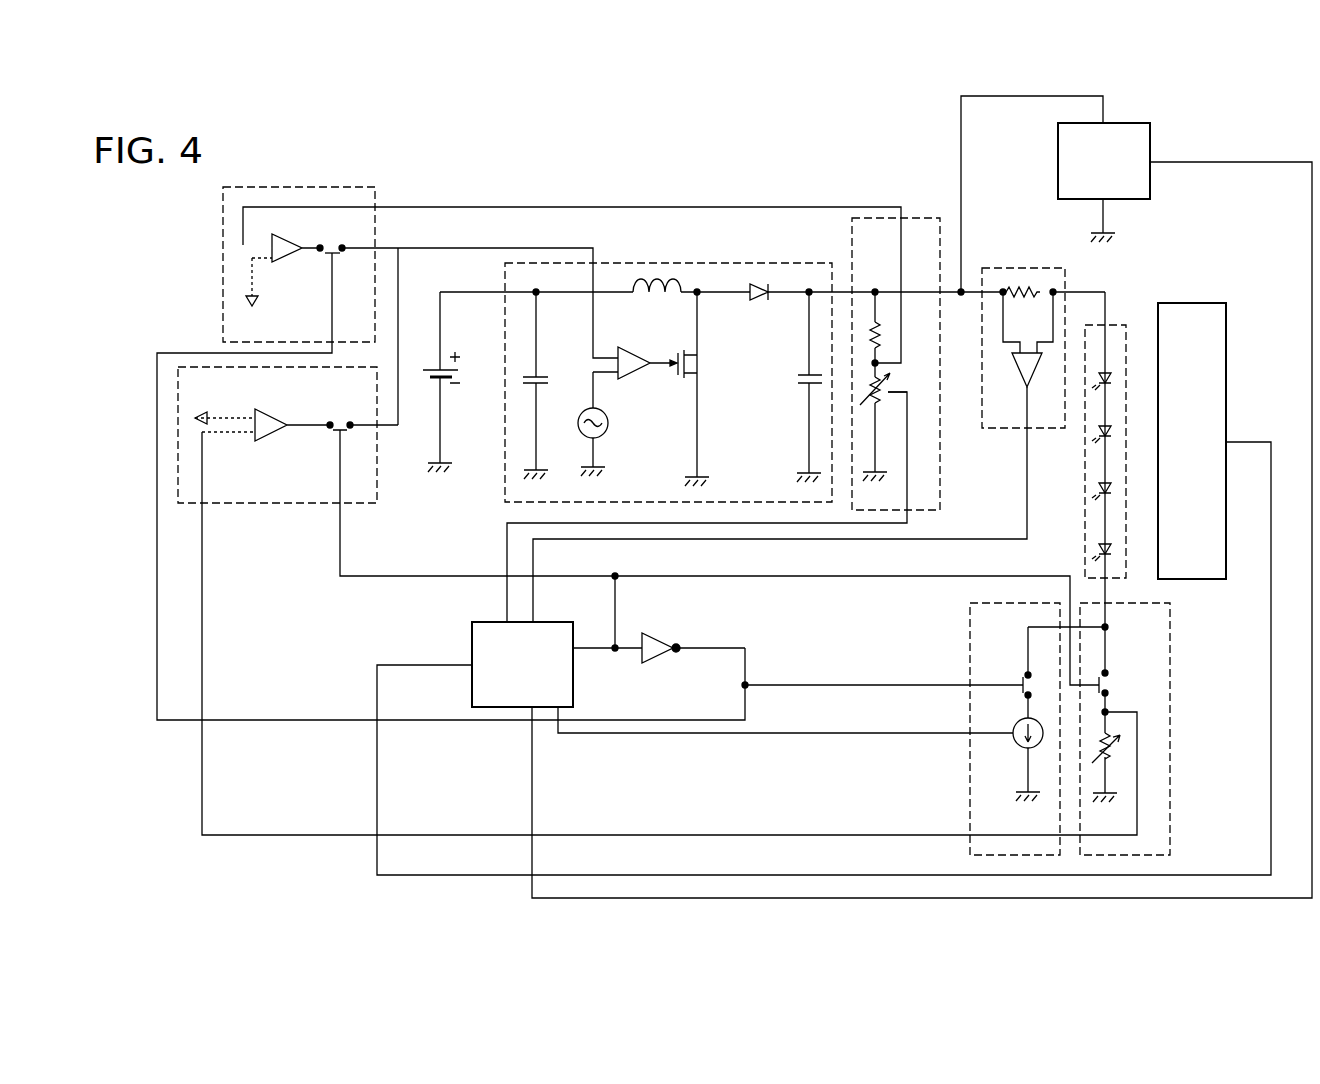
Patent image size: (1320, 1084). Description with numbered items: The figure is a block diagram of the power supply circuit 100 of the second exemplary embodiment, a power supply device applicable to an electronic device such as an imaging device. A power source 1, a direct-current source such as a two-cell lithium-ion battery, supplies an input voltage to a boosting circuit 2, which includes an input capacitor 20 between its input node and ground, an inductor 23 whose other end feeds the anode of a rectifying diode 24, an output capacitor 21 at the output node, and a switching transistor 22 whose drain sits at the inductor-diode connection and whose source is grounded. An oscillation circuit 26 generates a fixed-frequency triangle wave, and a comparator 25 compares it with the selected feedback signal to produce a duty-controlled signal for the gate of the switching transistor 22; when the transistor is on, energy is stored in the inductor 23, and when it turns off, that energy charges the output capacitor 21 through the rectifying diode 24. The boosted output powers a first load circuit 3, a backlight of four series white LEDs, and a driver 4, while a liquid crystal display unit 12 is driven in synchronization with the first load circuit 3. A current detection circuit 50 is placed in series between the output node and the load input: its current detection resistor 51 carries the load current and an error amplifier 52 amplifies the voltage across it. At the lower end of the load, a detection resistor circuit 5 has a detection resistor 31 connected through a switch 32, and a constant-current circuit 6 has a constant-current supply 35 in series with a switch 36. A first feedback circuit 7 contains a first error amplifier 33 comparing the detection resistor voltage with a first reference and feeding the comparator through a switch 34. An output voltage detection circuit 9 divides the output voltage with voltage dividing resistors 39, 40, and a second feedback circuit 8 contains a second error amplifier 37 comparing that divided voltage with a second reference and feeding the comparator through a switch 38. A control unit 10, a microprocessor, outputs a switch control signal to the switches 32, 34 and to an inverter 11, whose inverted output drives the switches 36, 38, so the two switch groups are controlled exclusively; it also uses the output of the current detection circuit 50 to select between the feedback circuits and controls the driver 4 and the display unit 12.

The power source 1 is at (435, 368).
The boosting circuit 2 is at (655, 262).
The first load circuit 3 is at (1114, 325).
The driver 4 is at (1058, 159).
The detection resistor circuit 5 is at (1170, 636).
The constant-current circuit 6 is at (969, 606).
The first feedback circuit 7 is at (270, 503).
The second feedback circuit 8 is at (276, 186).
The output voltage detection circuit 9 is at (923, 218).
The control unit 10 is at (470, 641).
The inverter 11 is at (656, 633).
The liquid crystal display unit 12 is at (1194, 303).
The input capacitor 20 is at (538, 373).
The output capacitor 21 is at (805, 386).
The switching transistor 22 is at (698, 362).
The inductor 23 is at (657, 292).
The rectifying diode 24 is at (756, 300).
The comparator 25 is at (626, 350).
The oscillation circuit 26 is at (608, 428).
The detection resistor 31 is at (1116, 751).
The switch 32 is at (1110, 690).
The first error amplifier 33 is at (271, 412).
The switch 34 is at (351, 421).
The constant-current supply 35 is at (1015, 722).
The switch 36 is at (1022, 679).
The second error amplifier 37 is at (299, 243).
The switch 38 is at (341, 258).
The voltage dividing resistor 39 is at (884, 333).
The voltage dividing resistor 40 is at (892, 378).
The current detection circuit 50 is at (997, 268).
The current detection resistor 51 is at (1027, 286).
The error amplifier 52 is at (1035, 378).
The power supply circuit 100 is at (312, 884).